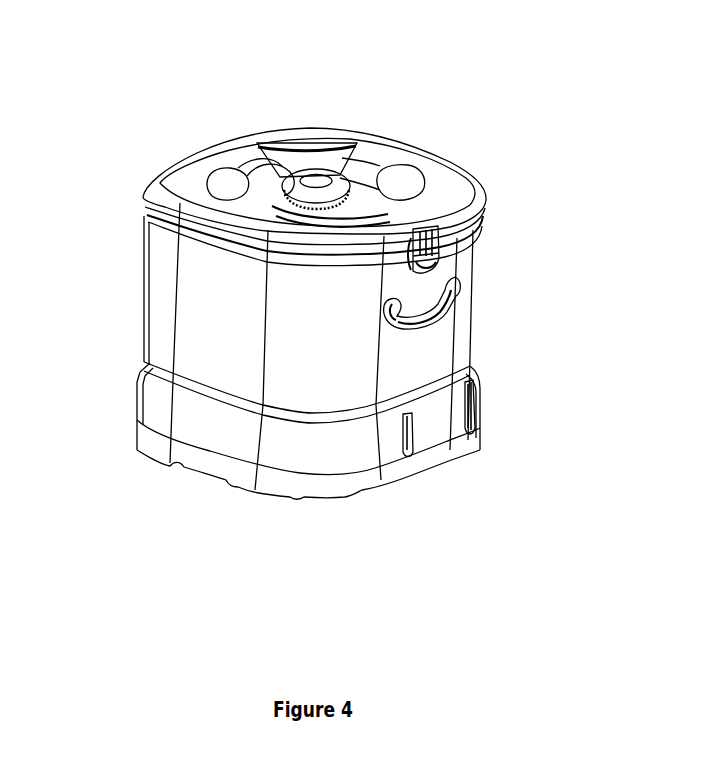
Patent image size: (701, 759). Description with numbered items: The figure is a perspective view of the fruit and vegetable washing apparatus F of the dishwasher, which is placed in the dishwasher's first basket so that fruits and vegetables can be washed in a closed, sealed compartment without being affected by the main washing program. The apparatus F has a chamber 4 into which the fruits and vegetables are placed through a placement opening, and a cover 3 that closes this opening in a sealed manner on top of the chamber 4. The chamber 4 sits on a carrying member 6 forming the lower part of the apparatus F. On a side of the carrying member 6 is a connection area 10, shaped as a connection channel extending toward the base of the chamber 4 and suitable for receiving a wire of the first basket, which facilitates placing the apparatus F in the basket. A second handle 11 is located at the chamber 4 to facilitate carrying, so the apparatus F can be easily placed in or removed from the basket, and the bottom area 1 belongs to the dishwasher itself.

The fruit and vegetable washing apparatus F is at (176, 97).
The cover 3 is at (410, 153).
The chamber 4 is at (148, 295).
The carrying member 6 is at (182, 425).
The bottom area 1 is at (438, 252).
The second handle 11 is at (455, 304).
The connection area 10 is at (472, 425).